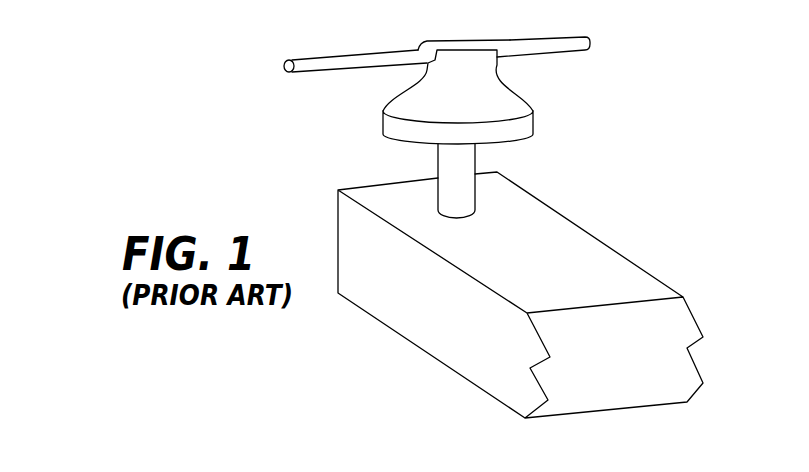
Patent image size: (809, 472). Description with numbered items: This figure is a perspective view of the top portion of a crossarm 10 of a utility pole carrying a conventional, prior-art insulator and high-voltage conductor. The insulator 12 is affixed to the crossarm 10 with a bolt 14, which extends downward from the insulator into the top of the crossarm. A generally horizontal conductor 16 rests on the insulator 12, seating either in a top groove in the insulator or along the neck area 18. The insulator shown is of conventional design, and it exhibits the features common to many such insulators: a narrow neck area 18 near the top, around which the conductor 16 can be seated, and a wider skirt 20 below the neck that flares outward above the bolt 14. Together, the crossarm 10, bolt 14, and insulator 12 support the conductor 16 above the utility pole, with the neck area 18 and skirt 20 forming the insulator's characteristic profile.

The crossarm 10 is at (613, 277).
The insulator 12 is at (545, 90).
The bolt 14 is at (457, 171).
The conductor 16 is at (566, 35).
The neck area 18 is at (374, 88).
The skirt 20 is at (522, 127).